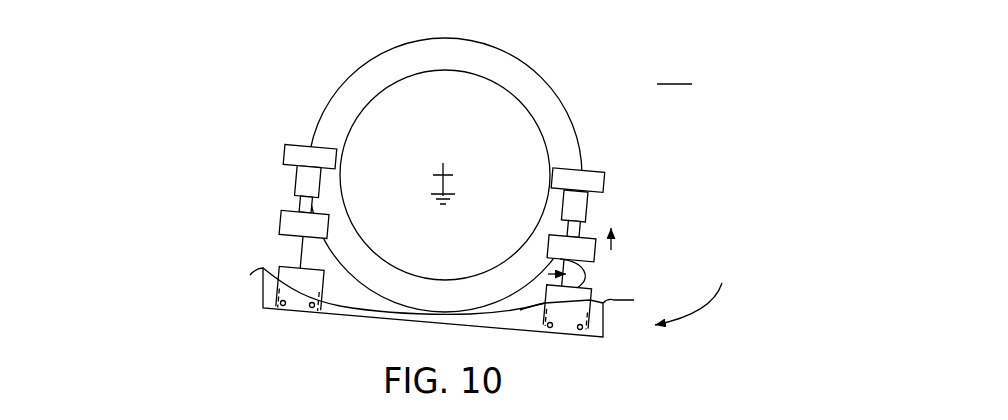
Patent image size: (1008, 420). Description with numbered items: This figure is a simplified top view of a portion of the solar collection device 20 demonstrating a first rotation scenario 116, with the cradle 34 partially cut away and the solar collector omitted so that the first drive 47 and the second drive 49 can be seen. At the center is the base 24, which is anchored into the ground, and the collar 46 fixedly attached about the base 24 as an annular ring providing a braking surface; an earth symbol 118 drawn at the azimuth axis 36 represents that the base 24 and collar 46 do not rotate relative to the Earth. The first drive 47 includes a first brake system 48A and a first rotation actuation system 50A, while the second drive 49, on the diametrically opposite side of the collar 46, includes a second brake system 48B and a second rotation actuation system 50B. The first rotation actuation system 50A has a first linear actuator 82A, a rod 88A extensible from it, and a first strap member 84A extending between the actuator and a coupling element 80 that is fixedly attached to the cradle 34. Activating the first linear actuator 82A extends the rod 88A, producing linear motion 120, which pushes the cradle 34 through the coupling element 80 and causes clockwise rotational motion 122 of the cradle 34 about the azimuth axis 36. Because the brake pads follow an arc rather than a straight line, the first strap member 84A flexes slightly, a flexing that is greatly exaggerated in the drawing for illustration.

The solar collection device 20 is at (273, 78).
The base 24 is at (478, 93).
The cradle 34 is at (352, 318).
The azimuth axis 36 is at (443, 164).
The collar 46 is at (545, 91).
The first drive 47 is at (822, 272).
The first brake system 48A is at (667, 208).
The second brake system 48B is at (260, 148).
The second drive 49 is at (162, 78).
The first rotation actuation system 50A is at (692, 272).
The second rotation actuation system 50B is at (230, 253).
The coupling element 80 is at (527, 305).
The first linear actuator 82A is at (596, 253).
The first strap member 84A is at (583, 279).
The rod 88A is at (582, 224).
The first rotation scenario 116 is at (683, 70).
The earth symbol 118 is at (446, 207).
The linear motion 120 is at (613, 240).
The rotational motion 122 is at (705, 310).